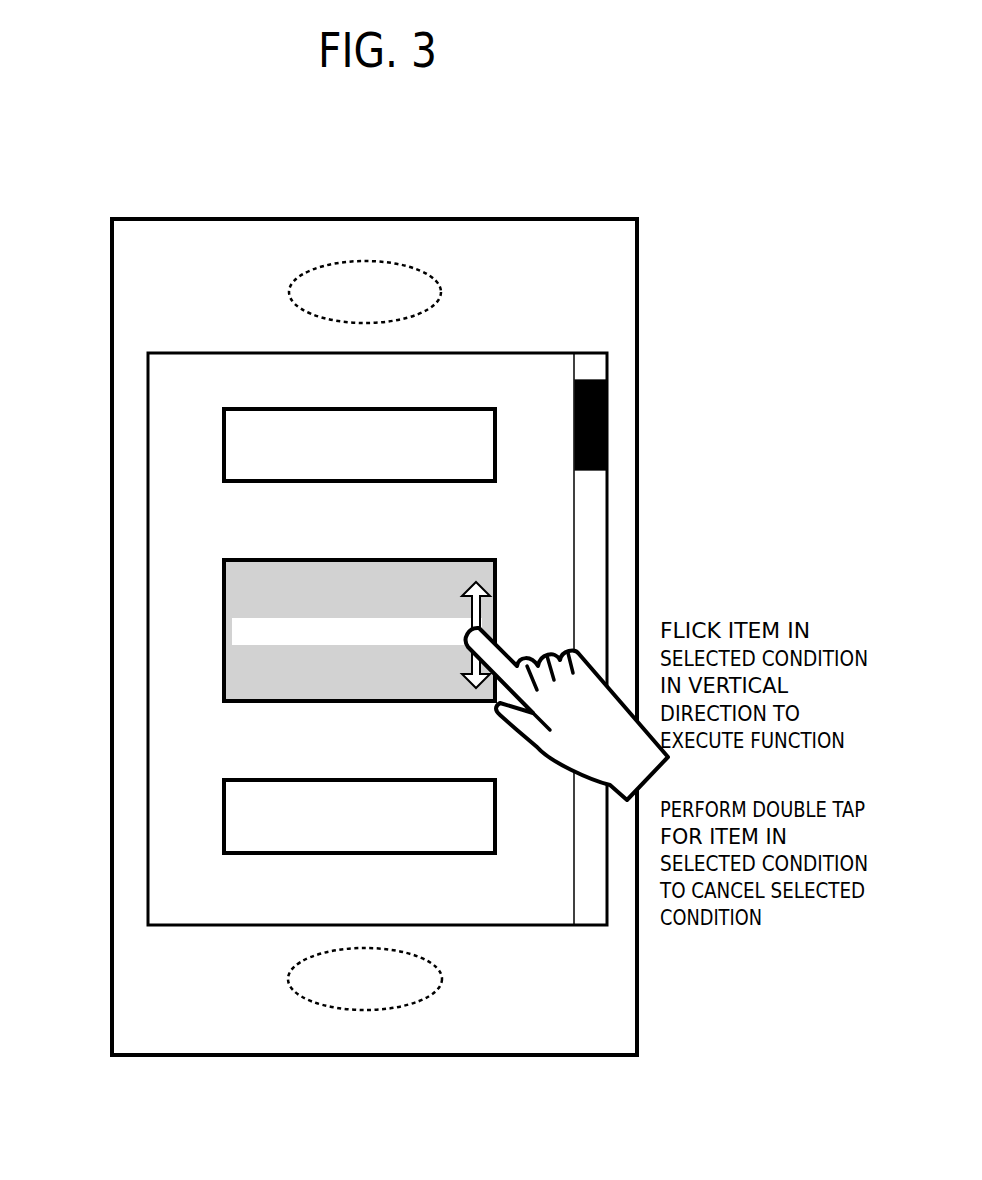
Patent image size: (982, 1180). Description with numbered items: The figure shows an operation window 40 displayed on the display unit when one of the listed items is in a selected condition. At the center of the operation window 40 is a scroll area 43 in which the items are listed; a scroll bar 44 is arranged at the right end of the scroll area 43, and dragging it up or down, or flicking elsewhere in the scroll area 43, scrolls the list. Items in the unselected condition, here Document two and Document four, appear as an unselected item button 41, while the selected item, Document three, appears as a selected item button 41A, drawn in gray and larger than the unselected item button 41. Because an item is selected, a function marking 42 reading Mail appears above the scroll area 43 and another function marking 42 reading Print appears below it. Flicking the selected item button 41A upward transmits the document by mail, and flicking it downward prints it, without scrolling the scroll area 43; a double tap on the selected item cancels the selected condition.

The operation window 40 is at (197, 219).
The unselected item button 41 is at (222, 455).
The selected item button 41A is at (222, 640).
The function marking 42 is at (362, 259).
The scroll area 43 is at (542, 545).
The scroll bar 44 is at (608, 447).